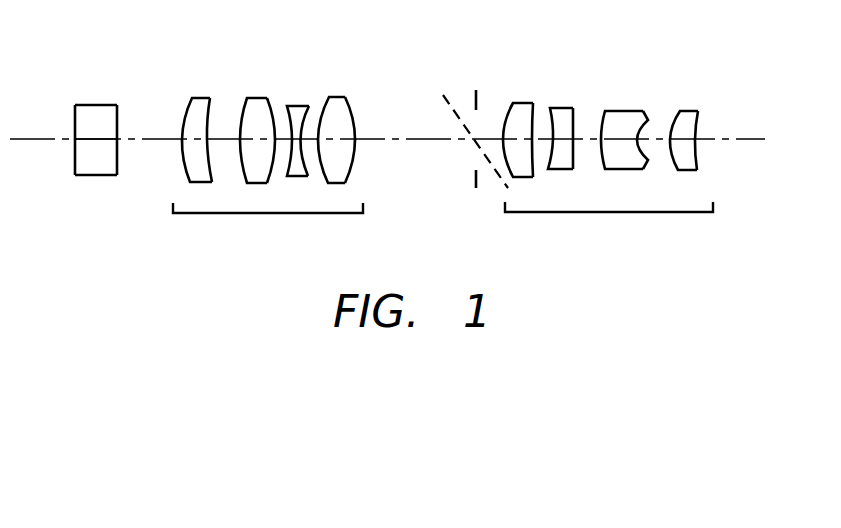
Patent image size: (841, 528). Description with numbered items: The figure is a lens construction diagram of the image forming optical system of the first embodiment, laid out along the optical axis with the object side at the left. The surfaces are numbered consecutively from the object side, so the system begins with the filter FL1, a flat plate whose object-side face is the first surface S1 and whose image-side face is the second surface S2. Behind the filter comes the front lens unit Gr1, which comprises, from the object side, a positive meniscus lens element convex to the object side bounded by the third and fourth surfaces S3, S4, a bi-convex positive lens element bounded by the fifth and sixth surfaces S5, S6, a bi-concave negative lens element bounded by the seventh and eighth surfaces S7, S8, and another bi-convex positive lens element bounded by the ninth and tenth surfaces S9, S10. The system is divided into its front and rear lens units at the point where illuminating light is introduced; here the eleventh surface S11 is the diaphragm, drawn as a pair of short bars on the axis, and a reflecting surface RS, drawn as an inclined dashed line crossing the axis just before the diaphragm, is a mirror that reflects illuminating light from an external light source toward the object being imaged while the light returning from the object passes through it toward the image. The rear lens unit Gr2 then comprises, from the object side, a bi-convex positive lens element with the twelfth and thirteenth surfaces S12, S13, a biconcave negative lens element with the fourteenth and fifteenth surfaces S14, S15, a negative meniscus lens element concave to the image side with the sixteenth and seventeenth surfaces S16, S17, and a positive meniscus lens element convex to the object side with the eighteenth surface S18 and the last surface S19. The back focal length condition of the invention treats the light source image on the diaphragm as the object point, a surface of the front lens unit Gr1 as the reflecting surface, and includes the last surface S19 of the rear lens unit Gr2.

The filter FL1 is at (95, 177).
The first surface S1 is at (77, 105).
The second surface S2 is at (117, 105).
The third surface S3 is at (190, 99).
The fourth surface S4 is at (209, 98).
The fifth surface S5 is at (247, 99).
The sixth surface S6 is at (268, 98).
The seventh surface S7 is at (288, 106).
The eighth surface S8 is at (309, 106).
The ninth surface S9 is at (330, 97).
The tenth surface S10 is at (345, 97).
The eleventh surface S11 is at (476, 90).
The reflecting surface RS is at (447, 98).
The twelfth surface S12 is at (514, 103).
The thirteenth surface S13 is at (532, 103).
The fourteenth surface S14 is at (550, 108).
The fifteenth surface S15 is at (573, 108).
The sixteenth surface S16 is at (606, 111).
The seventeenth surface S17 is at (645, 111).
The eighteenth surface S18 is at (681, 111).
The last surface S19 is at (697, 111).
The front lens unit Gr1 is at (268, 229).
The rear lens unit Gr2 is at (609, 229).